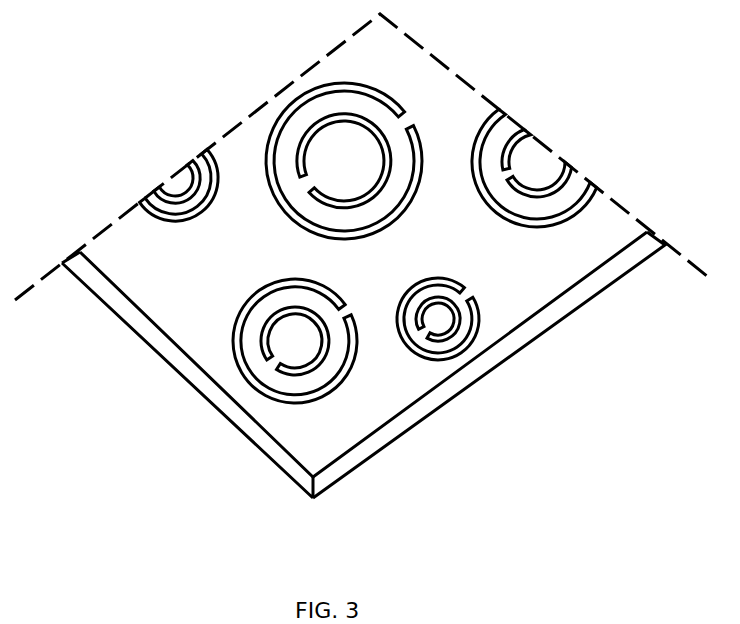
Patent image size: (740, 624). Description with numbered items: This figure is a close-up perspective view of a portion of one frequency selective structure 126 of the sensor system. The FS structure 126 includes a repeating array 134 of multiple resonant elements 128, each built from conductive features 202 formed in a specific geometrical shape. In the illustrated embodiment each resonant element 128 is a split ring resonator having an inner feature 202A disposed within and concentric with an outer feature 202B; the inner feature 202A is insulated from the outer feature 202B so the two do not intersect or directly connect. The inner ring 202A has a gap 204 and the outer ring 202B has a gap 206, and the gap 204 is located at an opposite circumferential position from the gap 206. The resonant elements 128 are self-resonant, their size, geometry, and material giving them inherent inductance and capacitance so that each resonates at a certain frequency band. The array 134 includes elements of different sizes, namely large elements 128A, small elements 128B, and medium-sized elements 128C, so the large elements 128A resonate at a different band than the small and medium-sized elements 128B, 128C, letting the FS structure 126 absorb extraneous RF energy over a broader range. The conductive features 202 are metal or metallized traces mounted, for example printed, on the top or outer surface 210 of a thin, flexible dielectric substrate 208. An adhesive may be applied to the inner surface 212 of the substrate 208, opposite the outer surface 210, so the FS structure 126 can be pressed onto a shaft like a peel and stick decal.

The frequency selective structure 126 is at (115, 156).
The resonant elements 128 is at (228, 333).
The large elements 128A is at (372, 85).
The small elements 128B is at (420, 362).
The medium-sized elements 128C is at (566, 217).
The repeating array 134 is at (452, 128).
The conductive features 202 is at (272, 241).
The inner feature 202A is at (313, 120).
The outer feature 202B is at (347, 82).
The gap 204 is at (300, 188).
The gap 206 is at (412, 113).
The dielectric substrate 208 is at (293, 470).
The outer surface 210 is at (383, 418).
The inner surface 212 is at (340, 482).